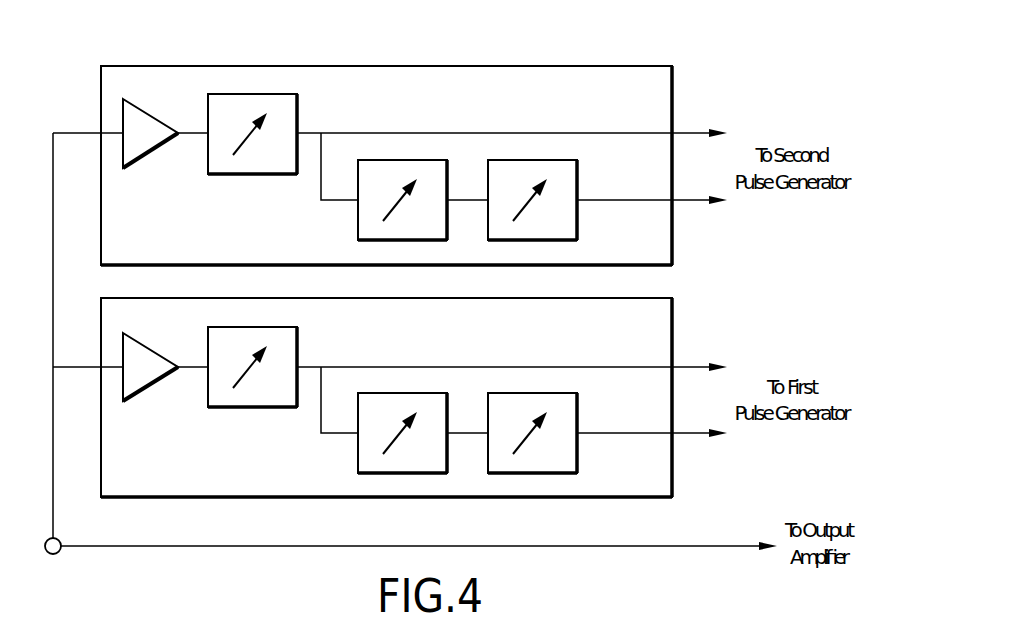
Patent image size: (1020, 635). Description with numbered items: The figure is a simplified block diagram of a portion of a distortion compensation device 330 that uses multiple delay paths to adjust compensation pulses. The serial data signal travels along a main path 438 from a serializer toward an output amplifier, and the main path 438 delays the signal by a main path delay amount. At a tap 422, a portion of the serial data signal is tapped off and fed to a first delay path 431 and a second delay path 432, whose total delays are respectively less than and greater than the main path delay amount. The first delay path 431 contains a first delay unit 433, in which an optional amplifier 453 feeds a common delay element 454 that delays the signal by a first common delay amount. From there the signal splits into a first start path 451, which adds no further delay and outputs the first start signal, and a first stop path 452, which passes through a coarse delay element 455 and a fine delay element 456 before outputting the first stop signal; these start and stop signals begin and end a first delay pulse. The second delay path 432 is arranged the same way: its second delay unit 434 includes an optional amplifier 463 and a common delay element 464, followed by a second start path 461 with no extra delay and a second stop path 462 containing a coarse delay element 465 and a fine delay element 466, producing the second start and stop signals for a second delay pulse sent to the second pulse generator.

The distortion compensation device 330 is at (381, 39).
The second delay unit 434 is at (509, 103).
The first delay unit 433 is at (462, 338).
The second delay path 432 is at (73, 133).
The first delay path 431 is at (73, 367).
The amplifier 463 is at (150, 153).
The common delay element 464 is at (262, 174).
The second start path 461 is at (387, 133).
The second stop path 462 is at (334, 198).
The coarse delay element 465 is at (357, 232).
The fine delay element 466 is at (578, 228).
The amplifier 453 is at (150, 387).
The common delay element 454 is at (240, 407).
The first start path 451 is at (372, 366).
The first stop path 452 is at (334, 432).
The coarse delay element 455 is at (357, 465).
The fine delay element 456 is at (578, 460).
The tap 422 is at (57, 553).
The main path 438 is at (244, 546).